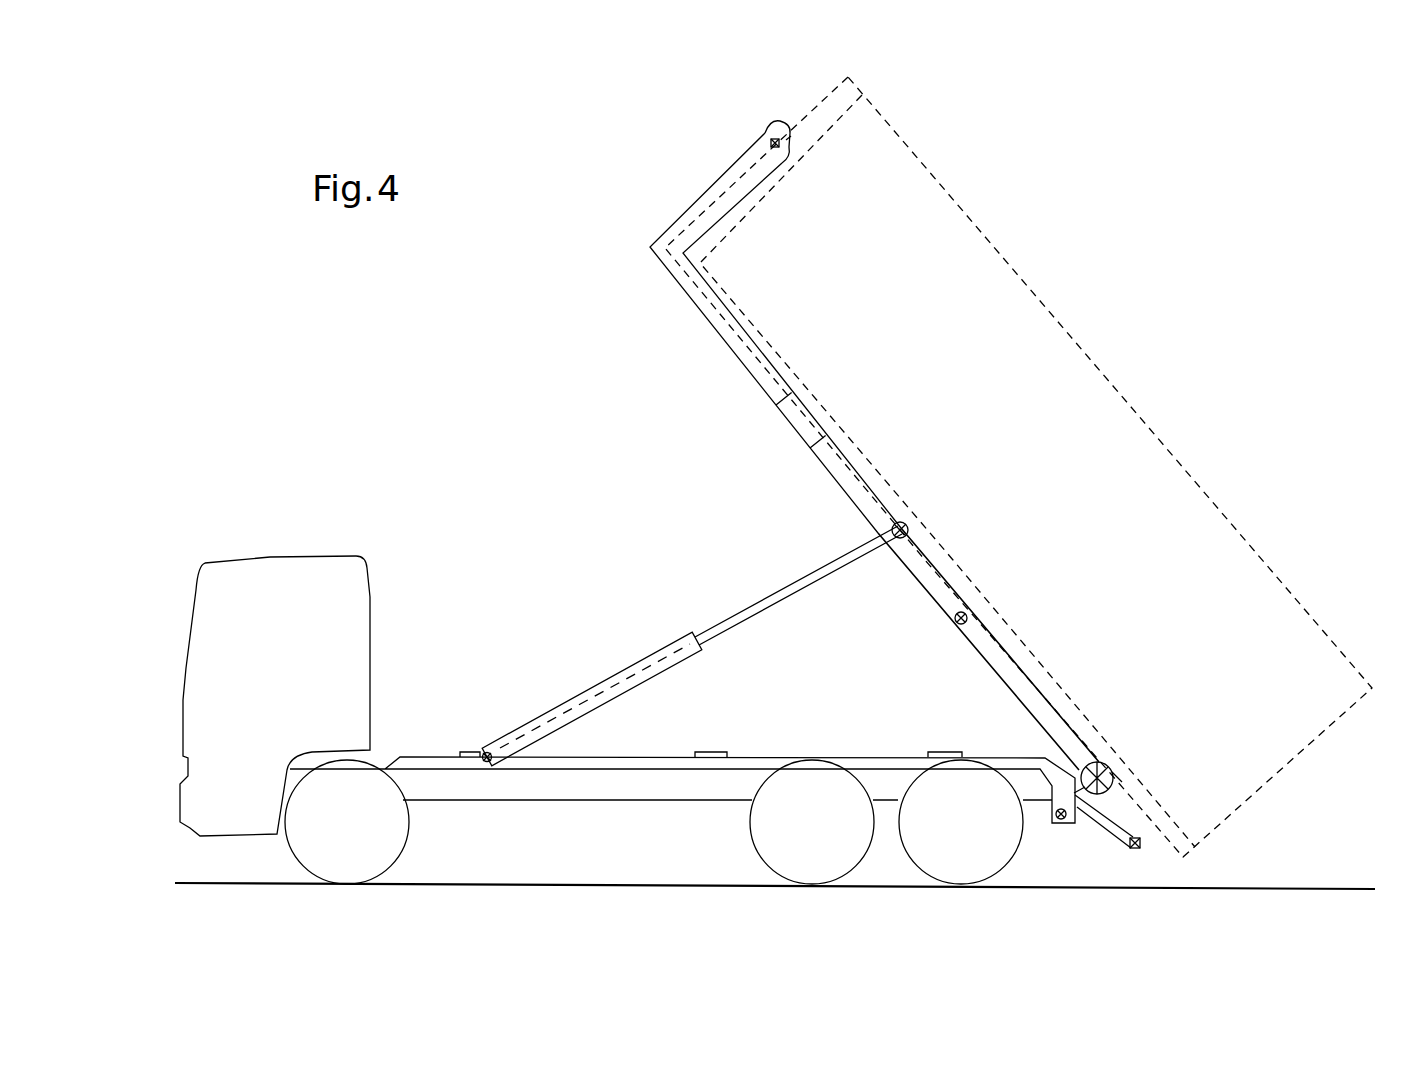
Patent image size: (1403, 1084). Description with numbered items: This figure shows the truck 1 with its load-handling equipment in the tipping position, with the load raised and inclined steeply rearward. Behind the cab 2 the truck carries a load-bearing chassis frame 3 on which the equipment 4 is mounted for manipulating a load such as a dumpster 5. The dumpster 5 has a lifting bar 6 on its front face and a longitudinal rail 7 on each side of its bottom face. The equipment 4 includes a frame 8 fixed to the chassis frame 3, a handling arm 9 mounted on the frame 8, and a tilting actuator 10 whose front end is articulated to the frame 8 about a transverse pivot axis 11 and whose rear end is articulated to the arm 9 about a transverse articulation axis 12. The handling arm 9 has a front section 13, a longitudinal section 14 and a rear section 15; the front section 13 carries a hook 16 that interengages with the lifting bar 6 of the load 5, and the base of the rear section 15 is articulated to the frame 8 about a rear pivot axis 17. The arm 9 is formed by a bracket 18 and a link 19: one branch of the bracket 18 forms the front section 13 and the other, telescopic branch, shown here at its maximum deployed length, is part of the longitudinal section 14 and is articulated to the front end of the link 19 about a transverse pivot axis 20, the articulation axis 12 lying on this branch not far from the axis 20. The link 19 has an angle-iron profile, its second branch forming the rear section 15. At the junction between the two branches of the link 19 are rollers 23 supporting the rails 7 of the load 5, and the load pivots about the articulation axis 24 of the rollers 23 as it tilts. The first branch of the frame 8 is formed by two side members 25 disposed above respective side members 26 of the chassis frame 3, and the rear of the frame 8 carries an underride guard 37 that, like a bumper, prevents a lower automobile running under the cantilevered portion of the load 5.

The truck 1 is at (233, 445).
The cab 2 is at (264, 577).
The chassis frame 3 is at (697, 829).
The equipment 4 is at (682, 821).
The dumpster 5 is at (936, 342).
The lifting bar 6 is at (771, 136).
The longitudinal rail 7 is at (1055, 688).
The frame 8 is at (825, 725).
The handling arm 9 is at (848, 423).
The tilting actuator 10 is at (637, 672).
The transverse pivot axis 11 is at (490, 750).
The transverse articulation axis 12 is at (900, 522).
The front section 13 is at (749, 304).
The longitudinal section 14 is at (930, 506).
The rear section 15 is at (1093, 827).
The hook 16 is at (793, 141).
The rear pivot axis 17 is at (1058, 822).
The bracket 18 is at (745, 335).
The link 19 is at (1003, 662).
The transverse pivot axis 20 is at (963, 626).
The rollers 23 is at (1114, 777).
The articulation axis 24 is at (1107, 762).
The side members 25 is at (642, 760).
The side members 26 is at (650, 795).
The underride guard 37 is at (1142, 850).